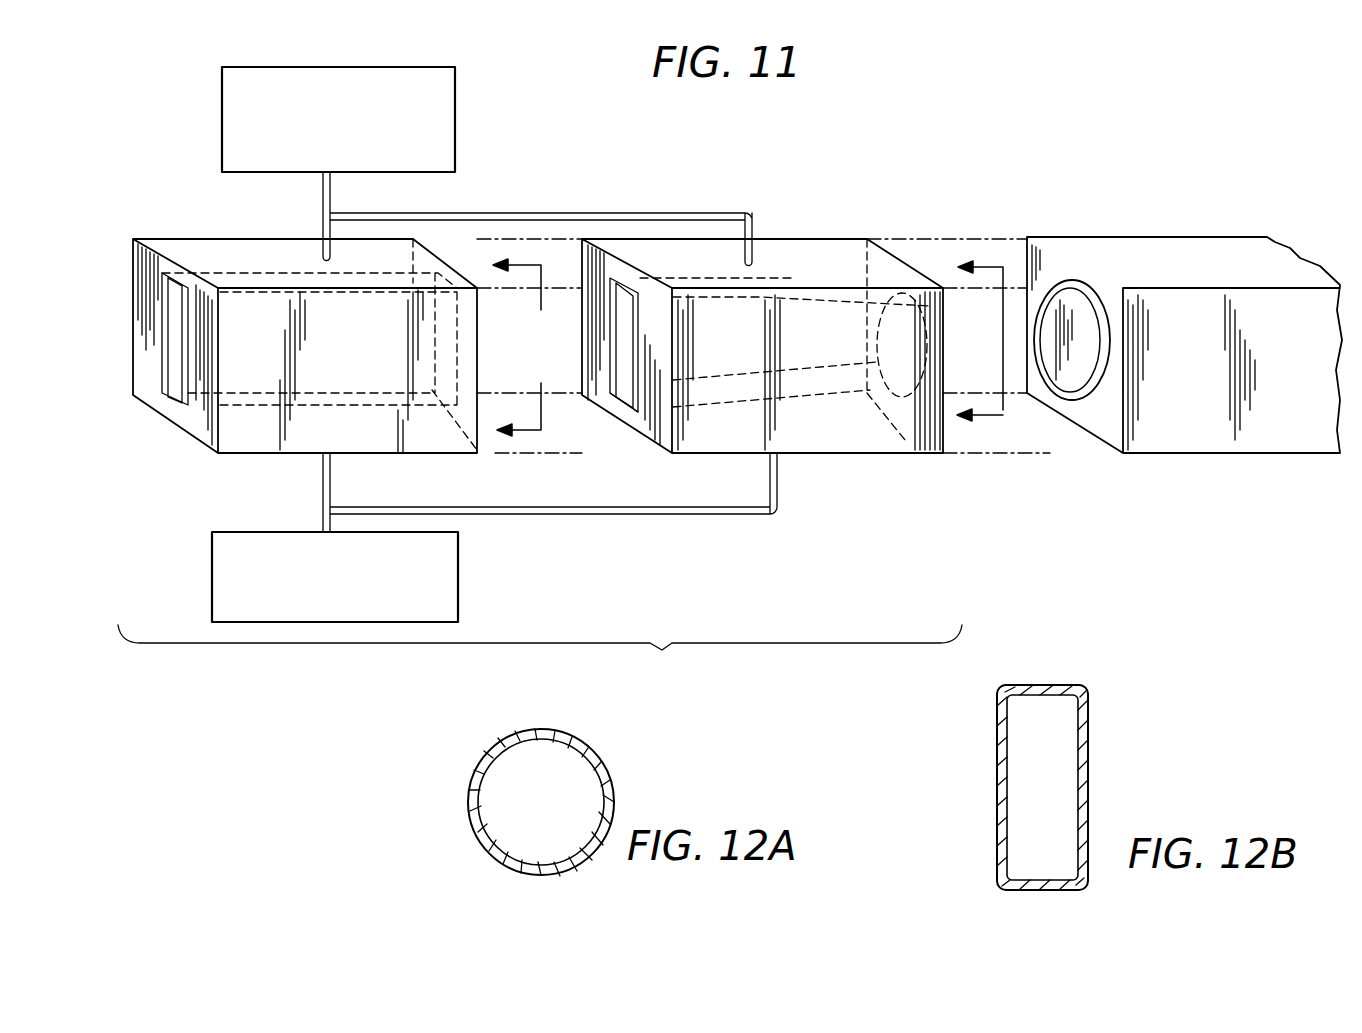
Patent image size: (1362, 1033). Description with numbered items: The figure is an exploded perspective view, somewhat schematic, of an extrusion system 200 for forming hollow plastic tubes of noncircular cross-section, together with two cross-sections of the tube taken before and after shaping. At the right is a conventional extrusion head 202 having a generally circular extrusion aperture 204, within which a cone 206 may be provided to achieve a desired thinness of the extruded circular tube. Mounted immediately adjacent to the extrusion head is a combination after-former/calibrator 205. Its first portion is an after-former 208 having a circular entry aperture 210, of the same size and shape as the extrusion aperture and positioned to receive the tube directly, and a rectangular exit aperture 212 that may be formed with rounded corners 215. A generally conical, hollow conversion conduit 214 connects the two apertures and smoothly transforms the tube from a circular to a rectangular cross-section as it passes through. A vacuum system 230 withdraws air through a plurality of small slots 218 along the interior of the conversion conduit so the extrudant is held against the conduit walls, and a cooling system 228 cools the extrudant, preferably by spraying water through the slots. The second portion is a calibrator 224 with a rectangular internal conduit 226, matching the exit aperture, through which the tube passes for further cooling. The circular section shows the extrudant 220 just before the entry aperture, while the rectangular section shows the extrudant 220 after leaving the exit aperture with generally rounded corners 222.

In FIG. 11, the extrusion system 200 is at (898, 152).
In FIG. 11, the extrusion head 202 is at (1081, 248).
In FIG. 11, the extrusion aperture 204 is at (1068, 397).
In FIG. 11, the combination after-former/calibrator 205 is at (540, 653).
In FIG. 11, the cone 206 is at (1085, 298).
In FIG. 11, the after-former 208 is at (707, 258).
In FIG. 11, the entry aperture 210 is at (953, 306).
In FIG. 11, the exit aperture 212 is at (626, 322).
In FIG. 11, the conversion conduit 214 is at (798, 290).
In FIG. 11, the rounded corners 215 is at (635, 405).
In FIG. 11, the vacuum slots 218 is at (622, 410).
In FIG. 12A, the extrudant 220 is at (612, 787).
In FIG. 12B, the extrudant 220 is at (1090, 784).
In FIG. 12B, the rounded corners 222 is at (1083, 683).
In FIG. 11, the calibrator 224 is at (200, 258).
In FIG. 11, the rectangular internal conduit 226 is at (165, 380).
In FIG. 11, the cooling system 228 is at (458, 106).
In FIG. 11, the vacuum system 230 is at (460, 580).